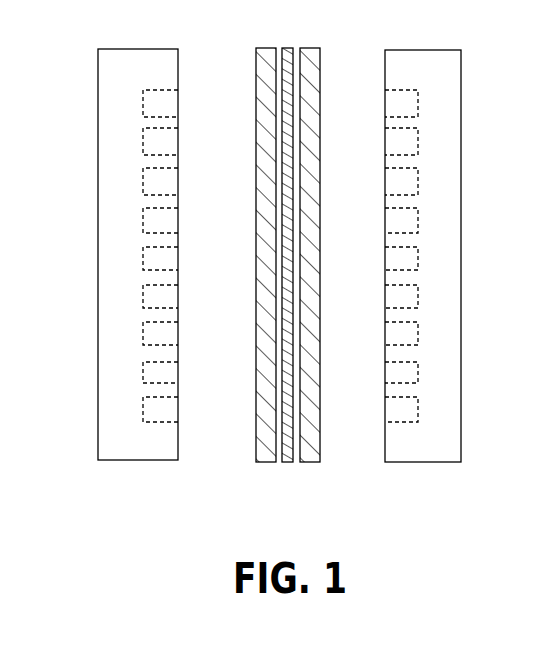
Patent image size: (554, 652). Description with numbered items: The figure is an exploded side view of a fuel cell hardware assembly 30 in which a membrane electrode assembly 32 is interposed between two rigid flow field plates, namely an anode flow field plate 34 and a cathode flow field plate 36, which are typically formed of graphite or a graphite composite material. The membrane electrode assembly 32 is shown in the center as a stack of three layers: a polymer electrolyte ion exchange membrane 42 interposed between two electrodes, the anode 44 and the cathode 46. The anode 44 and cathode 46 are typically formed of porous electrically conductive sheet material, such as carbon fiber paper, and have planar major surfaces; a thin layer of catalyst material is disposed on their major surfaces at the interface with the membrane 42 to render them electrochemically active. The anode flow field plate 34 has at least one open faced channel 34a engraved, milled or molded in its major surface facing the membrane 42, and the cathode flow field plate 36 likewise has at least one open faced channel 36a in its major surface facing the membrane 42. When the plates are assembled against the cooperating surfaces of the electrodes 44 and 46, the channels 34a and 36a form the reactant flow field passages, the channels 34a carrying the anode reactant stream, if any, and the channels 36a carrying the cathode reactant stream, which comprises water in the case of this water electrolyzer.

The fuel cell hardware assembly 30 is at (452, 47).
The membrane electrode assembly 32 is at (291, 262).
The anode flow field plate 34 is at (448, 198).
The open faced channel of anode flow field plate 34a is at (412, 260).
The cathode flow field plate 36 is at (110, 141).
The open faced channel of cathode flow field plate 36a is at (143, 262).
The polymer electrolyte membrane 42 is at (287, 48).
The anode 44 is at (310, 48).
The cathode 46 is at (264, 48).